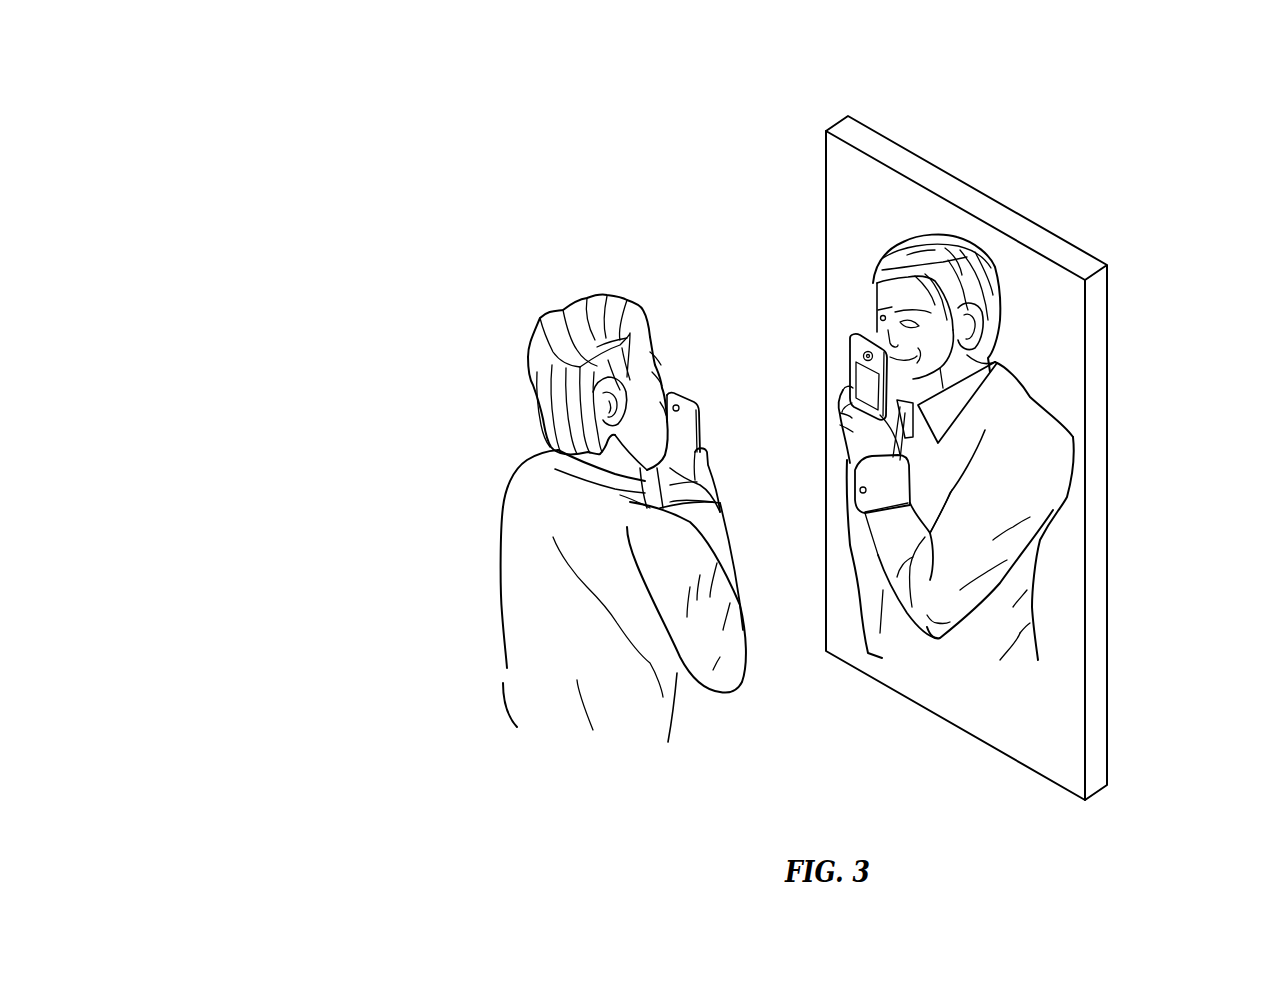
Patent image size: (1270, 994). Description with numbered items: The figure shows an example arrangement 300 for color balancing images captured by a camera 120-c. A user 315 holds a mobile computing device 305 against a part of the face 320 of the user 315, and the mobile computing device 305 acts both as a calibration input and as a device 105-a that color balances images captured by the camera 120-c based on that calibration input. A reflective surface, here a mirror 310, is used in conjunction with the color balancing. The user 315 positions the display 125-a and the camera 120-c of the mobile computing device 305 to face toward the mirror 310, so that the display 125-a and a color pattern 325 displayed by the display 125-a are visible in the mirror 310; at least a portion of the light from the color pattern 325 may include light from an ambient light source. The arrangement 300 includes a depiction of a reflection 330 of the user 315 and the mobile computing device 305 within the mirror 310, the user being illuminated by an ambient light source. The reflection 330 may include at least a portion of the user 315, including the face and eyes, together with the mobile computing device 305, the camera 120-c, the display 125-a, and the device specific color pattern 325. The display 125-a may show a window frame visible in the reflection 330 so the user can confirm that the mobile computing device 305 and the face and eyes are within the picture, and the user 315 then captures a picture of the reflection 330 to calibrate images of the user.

The arrangement 300 is at (333, 87).
The user 315 is at (539, 305).
The face 320 is at (670, 395).
The mobile computing device 305 is at (710, 444).
The device 105-a is at (937, 367).
The reflection 330 is at (1046, 196).
The mirror 310 is at (1093, 410).
The display 125-a is at (878, 400).
The camera 120-c is at (866, 352).
The color pattern 325 is at (858, 385).